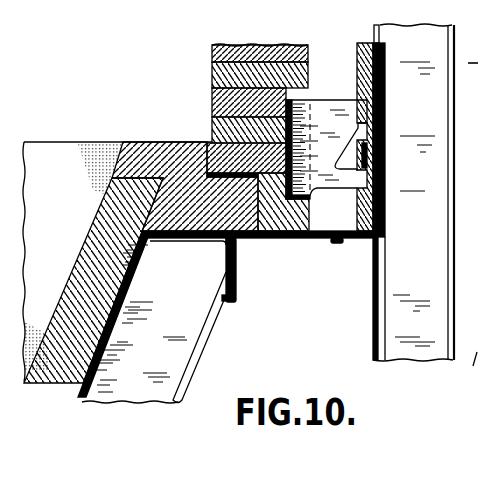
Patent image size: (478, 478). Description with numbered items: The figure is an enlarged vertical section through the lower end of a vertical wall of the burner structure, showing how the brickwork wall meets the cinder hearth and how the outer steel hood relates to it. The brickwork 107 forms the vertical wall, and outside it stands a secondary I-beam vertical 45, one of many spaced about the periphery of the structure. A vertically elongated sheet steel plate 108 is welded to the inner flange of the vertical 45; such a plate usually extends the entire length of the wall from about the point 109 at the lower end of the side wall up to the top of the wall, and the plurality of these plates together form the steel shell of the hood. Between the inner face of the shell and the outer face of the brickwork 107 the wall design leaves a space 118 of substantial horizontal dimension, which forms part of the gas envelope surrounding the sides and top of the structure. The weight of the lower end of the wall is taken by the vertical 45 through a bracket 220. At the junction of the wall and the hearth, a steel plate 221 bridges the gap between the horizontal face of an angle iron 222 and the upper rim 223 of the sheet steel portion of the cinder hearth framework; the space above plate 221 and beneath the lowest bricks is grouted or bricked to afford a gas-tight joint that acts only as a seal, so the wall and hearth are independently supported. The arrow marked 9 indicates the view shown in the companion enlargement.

The section line indicator for FIG. 9 is at (207, 67).
The brickwork 107 is at (207, 88).
The space 118 is at (324, 63).
The bracket 220 is at (345, 99).
The plate 108 is at (386, 106).
The lower end of plate 108 109 is at (386, 237).
The secondary I-beam vertical 45 is at (373, 334).
The steel plate 221 is at (272, 239).
The angle iron 222 is at (340, 243).
The upper rim 223 is at (183, 242).